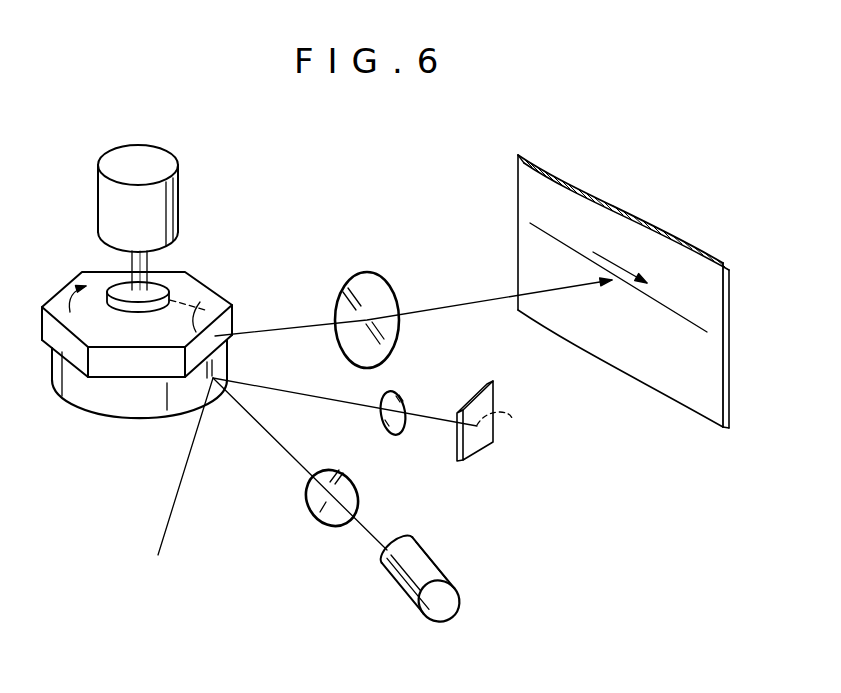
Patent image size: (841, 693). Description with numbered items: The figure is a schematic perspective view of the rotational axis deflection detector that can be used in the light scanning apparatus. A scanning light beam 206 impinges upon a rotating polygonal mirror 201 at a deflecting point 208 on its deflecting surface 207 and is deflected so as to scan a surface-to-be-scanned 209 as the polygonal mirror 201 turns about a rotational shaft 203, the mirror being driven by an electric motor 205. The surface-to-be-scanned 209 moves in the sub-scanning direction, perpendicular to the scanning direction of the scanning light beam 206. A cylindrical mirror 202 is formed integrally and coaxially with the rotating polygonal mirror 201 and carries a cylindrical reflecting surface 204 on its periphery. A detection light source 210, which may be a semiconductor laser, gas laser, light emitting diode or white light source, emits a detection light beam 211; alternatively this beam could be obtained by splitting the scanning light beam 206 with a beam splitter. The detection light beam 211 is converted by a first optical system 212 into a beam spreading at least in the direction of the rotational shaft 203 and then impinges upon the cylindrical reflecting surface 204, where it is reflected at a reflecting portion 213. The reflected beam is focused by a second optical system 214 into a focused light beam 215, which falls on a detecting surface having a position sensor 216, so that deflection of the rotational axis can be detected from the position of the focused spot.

The rotating polygonal mirror 201 is at (59, 272).
The cylindrical mirror 202 is at (100, 418).
The rotational shaft 203 is at (147, 263).
The cylindrical reflecting surface 204 is at (135, 398).
The electric motor 205 is at (180, 203).
The scanning light beam 206 is at (168, 523).
The deflecting surface 207 is at (200, 303).
The deflecting point 208 is at (238, 331).
The surface-to-be-scanned 209 is at (517, 177).
The detection light source 210 is at (397, 588).
The detection light beam 211 is at (368, 537).
The first optical system 212 is at (310, 525).
The reflecting portion 213 is at (220, 400).
The second optical system 214 is at (390, 437).
The focused light beam 215 is at (518, 426).
The position sensor 216 is at (477, 445).